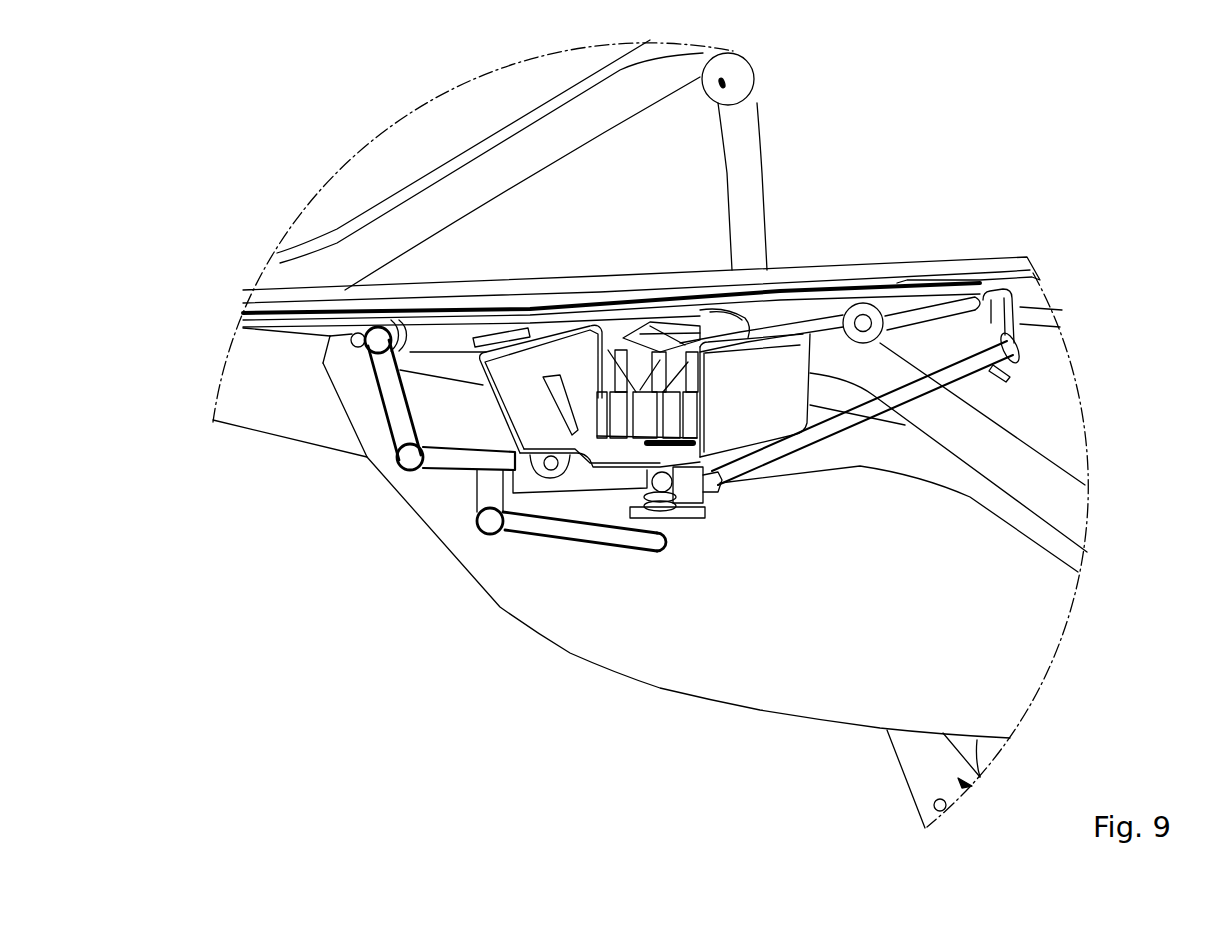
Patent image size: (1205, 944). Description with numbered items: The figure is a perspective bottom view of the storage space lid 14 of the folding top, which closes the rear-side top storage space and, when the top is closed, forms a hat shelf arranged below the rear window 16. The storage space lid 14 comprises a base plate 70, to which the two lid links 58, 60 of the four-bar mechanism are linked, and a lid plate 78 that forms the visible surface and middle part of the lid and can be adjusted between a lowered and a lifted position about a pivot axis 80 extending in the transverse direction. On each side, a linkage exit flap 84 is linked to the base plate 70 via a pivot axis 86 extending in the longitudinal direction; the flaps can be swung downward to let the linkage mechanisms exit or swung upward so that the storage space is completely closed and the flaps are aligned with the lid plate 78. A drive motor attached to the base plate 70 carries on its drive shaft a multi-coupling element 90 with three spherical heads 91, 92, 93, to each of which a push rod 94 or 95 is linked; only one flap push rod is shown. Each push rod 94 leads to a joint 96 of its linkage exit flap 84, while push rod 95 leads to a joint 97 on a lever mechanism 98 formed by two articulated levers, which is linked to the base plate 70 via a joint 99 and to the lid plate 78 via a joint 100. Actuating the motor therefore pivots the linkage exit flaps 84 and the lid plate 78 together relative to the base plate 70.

The storage space lid 14 is at (930, 257).
The rear window 16 is at (410, 133).
The lid link 58 is at (1063, 502).
The lid link 60 is at (942, 472).
The base plate 70 is at (820, 313).
The lid plate 78 is at (800, 277).
The pivot axis 80 is at (866, 322).
The linkage exit flap 84 is at (1050, 400).
The pivot axis 86 is at (1013, 300).
The multi-coupling element 90 is at (664, 488).
The spherical head 91 is at (657, 548).
The spherical head 92 is at (715, 495).
The spherical head 93 is at (673, 500).
The push rod 94 is at (887, 400).
The push rod 95 is at (570, 530).
The joint 96 is at (1020, 348).
The joint 97 is at (490, 521).
The lever mechanism 98 is at (400, 410).
The joint 99 is at (543, 470).
The joint 100 is at (343, 321).